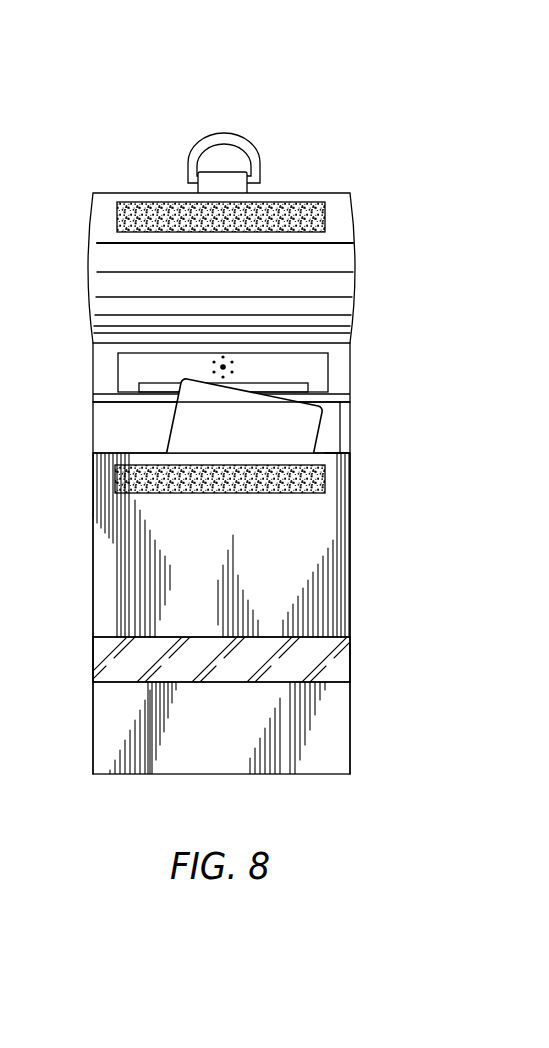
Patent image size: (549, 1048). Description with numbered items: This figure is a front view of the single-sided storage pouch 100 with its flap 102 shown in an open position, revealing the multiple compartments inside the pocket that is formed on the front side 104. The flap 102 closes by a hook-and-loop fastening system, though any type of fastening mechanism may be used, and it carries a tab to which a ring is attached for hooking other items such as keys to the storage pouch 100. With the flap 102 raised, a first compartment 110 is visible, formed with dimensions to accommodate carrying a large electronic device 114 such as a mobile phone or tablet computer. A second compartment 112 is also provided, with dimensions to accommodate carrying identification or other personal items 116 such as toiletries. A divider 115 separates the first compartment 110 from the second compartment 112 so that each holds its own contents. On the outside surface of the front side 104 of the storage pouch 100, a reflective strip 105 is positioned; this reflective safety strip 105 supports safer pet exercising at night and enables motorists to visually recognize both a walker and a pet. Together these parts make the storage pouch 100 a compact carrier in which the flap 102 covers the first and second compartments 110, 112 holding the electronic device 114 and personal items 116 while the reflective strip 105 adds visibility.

The storage pouch 100 is at (308, 172).
The flap 102 is at (98, 250).
The front side 104 is at (117, 600).
The reflective strip 105 is at (118, 657).
The first compartment 110 is at (340, 393).
The second compartment 112 is at (332, 447).
The electronic device 114 is at (118, 372).
The divider 115 is at (340, 407).
The personal items 116 is at (165, 432).